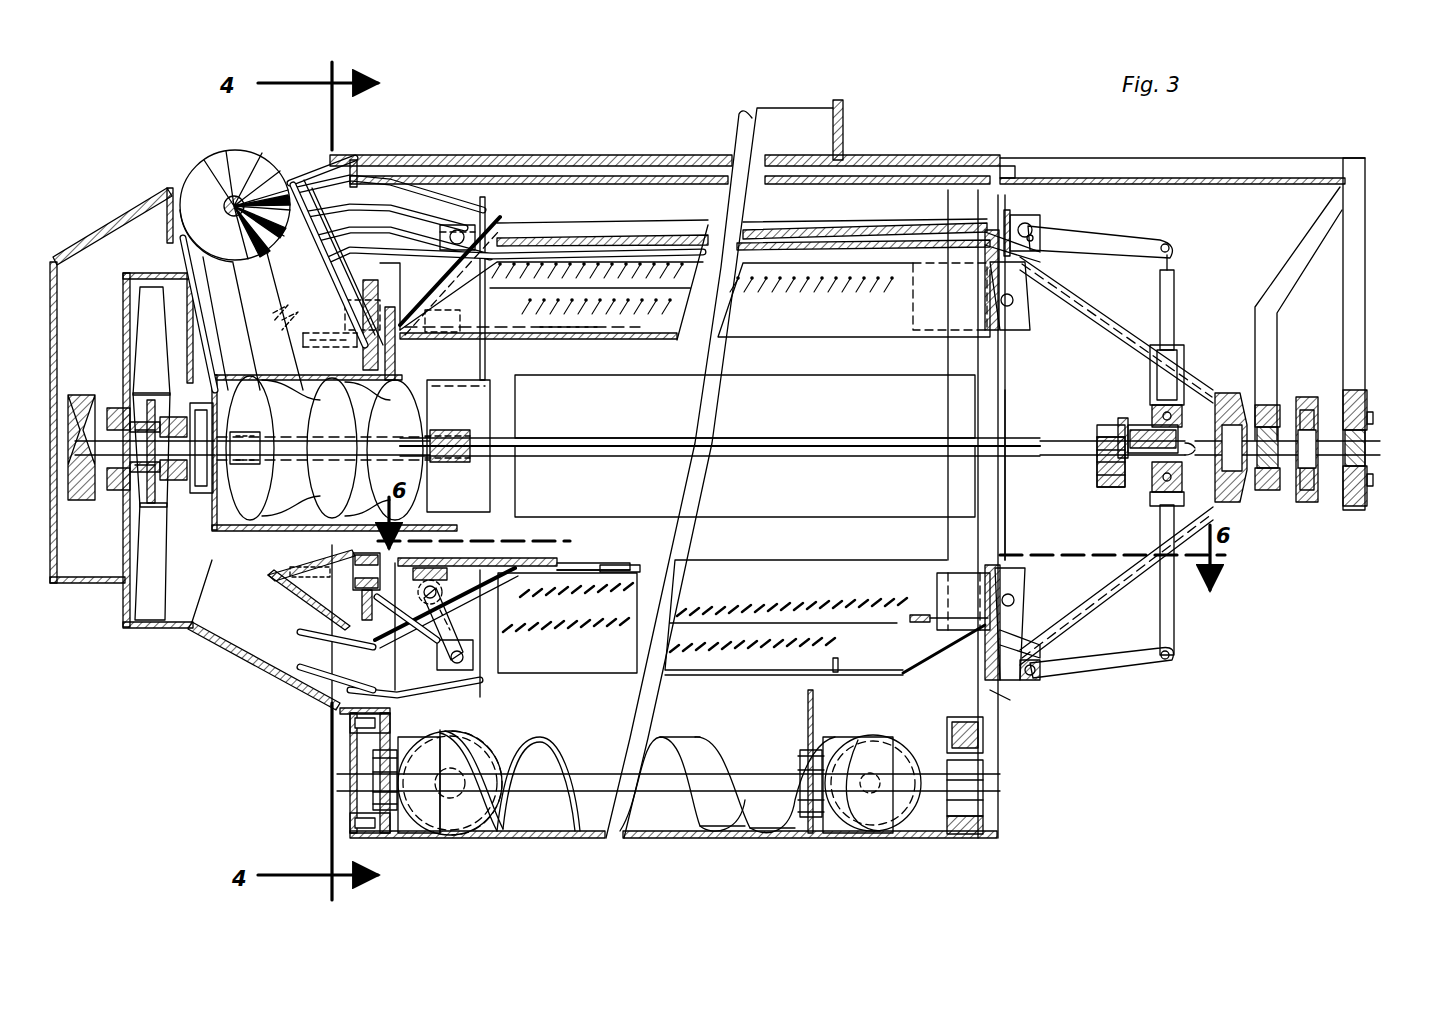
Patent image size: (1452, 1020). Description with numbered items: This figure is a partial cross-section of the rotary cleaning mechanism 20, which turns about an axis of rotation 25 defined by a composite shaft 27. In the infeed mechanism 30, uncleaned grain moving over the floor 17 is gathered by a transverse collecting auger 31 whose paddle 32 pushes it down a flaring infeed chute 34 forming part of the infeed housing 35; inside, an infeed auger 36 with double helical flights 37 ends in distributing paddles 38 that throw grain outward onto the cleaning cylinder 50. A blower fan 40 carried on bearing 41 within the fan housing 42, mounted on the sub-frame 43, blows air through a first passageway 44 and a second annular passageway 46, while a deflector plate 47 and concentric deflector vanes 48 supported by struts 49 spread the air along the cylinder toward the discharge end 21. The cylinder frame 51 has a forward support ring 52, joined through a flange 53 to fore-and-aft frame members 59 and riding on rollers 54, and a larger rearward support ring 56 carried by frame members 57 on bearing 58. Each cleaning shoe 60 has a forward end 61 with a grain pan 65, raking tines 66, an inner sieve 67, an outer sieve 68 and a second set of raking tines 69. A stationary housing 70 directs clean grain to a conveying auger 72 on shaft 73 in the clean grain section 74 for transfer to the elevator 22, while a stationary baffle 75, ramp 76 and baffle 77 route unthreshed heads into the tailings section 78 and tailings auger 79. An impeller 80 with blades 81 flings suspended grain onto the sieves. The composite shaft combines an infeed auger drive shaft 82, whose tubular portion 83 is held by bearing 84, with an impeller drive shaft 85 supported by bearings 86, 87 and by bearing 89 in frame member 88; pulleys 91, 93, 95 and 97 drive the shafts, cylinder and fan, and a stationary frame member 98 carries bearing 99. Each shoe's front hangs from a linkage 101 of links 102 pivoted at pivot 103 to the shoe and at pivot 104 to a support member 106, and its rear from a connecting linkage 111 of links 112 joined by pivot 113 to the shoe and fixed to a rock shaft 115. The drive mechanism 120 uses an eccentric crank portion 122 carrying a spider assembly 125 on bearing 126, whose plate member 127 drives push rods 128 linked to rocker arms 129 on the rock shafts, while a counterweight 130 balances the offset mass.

The floor 17 is at (398, 155).
The cleaning mechanism 20 is at (205, 720).
The discharge end 21 is at (1232, 646).
The elevator 22 is at (458, 835).
The axis of rotation 25 is at (1376, 450).
The composite shaft 27 is at (1010, 452).
The infeed mechanism 30 is at (232, 762).
The collecting auger 31 is at (232, 150).
The paddle 32 is at (230, 214).
The infeed chute 34 is at (235, 317).
The infeed housing 35 is at (262, 532).
The infeed auger 36 is at (325, 527).
The double helical flights 37 is at (325, 378).
The distributing paddles 38 is at (470, 385).
The blower fan 40 is at (147, 592).
The bearing 41 is at (165, 482).
The fan housing 42 is at (232, 646).
The sub-frame 43 is at (350, 724).
The first passageway 44 is at (300, 555).
The second annular passageway 46 is at (272, 618).
The deflector plate 47 is at (488, 548).
The deflector vanes 48 is at (300, 645).
The struts 49 is at (192, 625).
The cleaning cylinder 50 is at (580, 690).
The frame 51 is at (1026, 220).
The forward support ring 52 is at (365, 610).
The flange 53 is at (320, 286).
The rollers 54 is at (360, 512).
The rearward support ring 56 is at (993, 698).
The frame members 57 is at (1090, 585).
The bearing 58 is at (1250, 462).
The fore-and-aft frame members 59 is at (598, 238).
The cleaning shoes 60 is at (880, 673).
The forward end 61 is at (425, 342).
The grain pan 65 is at (525, 340).
The raking tines 66 is at (600, 345).
The inner sieve 67 is at (640, 290).
The outer sieve 68 is at (702, 655).
The second set of raking tines 69 is at (950, 606).
The stationary housing 70 is at (560, 180).
The conveying auger 72 is at (572, 820).
The shaft 73 is at (345, 790).
The clean grain section 74 is at (686, 812).
The stationary baffle 75 is at (806, 716).
The ramp 76 is at (920, 660).
The baffle 77 is at (840, 675).
The tailings section 78 is at (935, 812).
The tailings auger 79 is at (898, 740).
The impeller 80 is at (1000, 393).
The blades 81 is at (778, 436).
The infeed auger drive shaft 82 is at (72, 492).
The tubular portion 83 is at (296, 462).
The bearing 84 is at (178, 405).
The impeller drive shaft 85 is at (1040, 458).
The bearing 86 is at (250, 420).
The bearing 87 is at (460, 430).
The frame member 88 is at (1362, 272).
The bearing 89 is at (1372, 420).
The pulley 91 is at (1305, 470).
The pulley 93 is at (1233, 398).
The pulley 95 is at (100, 390).
The pulley 97 is at (113, 345).
The stationary frame member 98 is at (1305, 243).
The bearing 99 is at (1270, 410).
The linkage 101 is at (478, 252).
The links 102 is at (466, 325).
The pivot 103 is at (436, 580).
The pivot 104 is at (480, 662).
The support member 106 is at (425, 704).
The connecting linkage 111 is at (1035, 258).
The links 112 is at (1022, 290).
The pivot 113 is at (1005, 560).
The rock shaft 115 is at (1045, 224).
The drive mechanism 120 is at (1195, 668).
The eccentric crank portion 122 is at (1145, 425).
The spider assembly 125 is at (1180, 308).
The bearing 126 is at (1150, 460).
The plate member 127 is at (1172, 385).
The push rods 128 is at (1160, 288).
The rocker arm 129 is at (1128, 238).
The counterweight 130 is at (1098, 484).